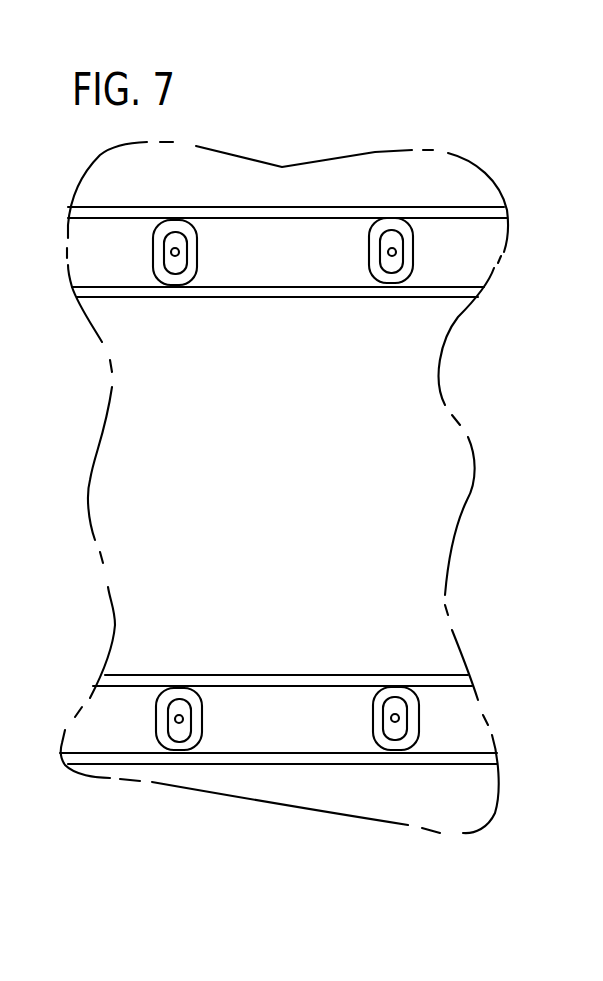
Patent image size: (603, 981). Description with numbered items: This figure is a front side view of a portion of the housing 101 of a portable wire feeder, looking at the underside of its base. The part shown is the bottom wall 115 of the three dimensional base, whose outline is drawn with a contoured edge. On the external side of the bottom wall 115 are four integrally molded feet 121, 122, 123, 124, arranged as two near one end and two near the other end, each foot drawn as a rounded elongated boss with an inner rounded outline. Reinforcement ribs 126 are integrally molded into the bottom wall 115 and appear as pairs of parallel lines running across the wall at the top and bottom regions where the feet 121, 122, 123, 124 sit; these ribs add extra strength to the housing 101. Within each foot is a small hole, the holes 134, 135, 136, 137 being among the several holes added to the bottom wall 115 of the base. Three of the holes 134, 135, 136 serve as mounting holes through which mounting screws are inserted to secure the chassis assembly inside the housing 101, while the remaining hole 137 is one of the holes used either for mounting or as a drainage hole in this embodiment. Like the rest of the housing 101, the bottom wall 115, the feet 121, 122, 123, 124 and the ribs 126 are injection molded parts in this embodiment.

The housing 101 is at (300, 487).
The bottom wall 115 is at (135, 580).
The foot 121 is at (154, 247).
The foot 122 is at (407, 238).
The foot 123 is at (180, 750).
The foot 124 is at (388, 748).
The reinforcement ribs 126 is at (470, 212).
The mounting hole 134 is at (171, 253).
The mounting hole 135 is at (397, 253).
The mounting hole 136 is at (174, 718).
The hole 137 is at (400, 718).